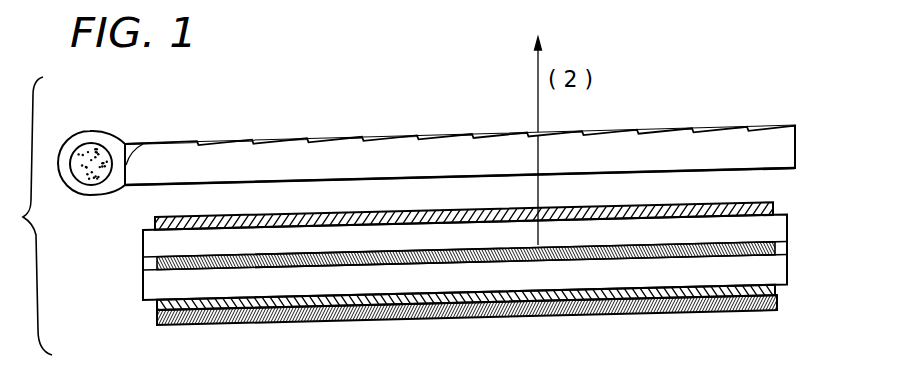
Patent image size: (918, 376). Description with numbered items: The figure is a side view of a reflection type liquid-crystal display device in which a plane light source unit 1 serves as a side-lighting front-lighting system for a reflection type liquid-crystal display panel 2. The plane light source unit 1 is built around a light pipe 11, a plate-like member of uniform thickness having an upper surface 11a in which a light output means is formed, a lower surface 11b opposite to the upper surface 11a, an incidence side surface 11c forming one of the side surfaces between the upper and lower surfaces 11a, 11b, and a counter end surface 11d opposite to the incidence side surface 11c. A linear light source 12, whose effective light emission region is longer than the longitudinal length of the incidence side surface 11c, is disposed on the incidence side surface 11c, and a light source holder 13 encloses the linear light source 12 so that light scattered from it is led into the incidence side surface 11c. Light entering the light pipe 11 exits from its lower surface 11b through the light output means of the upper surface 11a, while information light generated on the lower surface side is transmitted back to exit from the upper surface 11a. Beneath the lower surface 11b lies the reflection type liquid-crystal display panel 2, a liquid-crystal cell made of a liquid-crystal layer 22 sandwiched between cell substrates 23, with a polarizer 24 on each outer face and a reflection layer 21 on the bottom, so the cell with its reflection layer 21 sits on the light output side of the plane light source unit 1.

The plane light source unit 1 is at (458, 124).
The reflection type liquid-crystal display panel 2 is at (520, 264).
The light pipe 11 is at (497, 144).
The upper surface 11a is at (438, 137).
The lower surface 11b is at (435, 177).
The incidence side surface 11c is at (143, 144).
The counter end surface 11d is at (796, 137).
The linear light source 12 is at (82, 146).
The light source holder 13 is at (114, 126).
The reflection layer 21 is at (506, 318).
The liquid-crystal layer 22 is at (795, 248).
The cell substrate 23 is at (798, 225).
The polarizer 24 is at (785, 202).